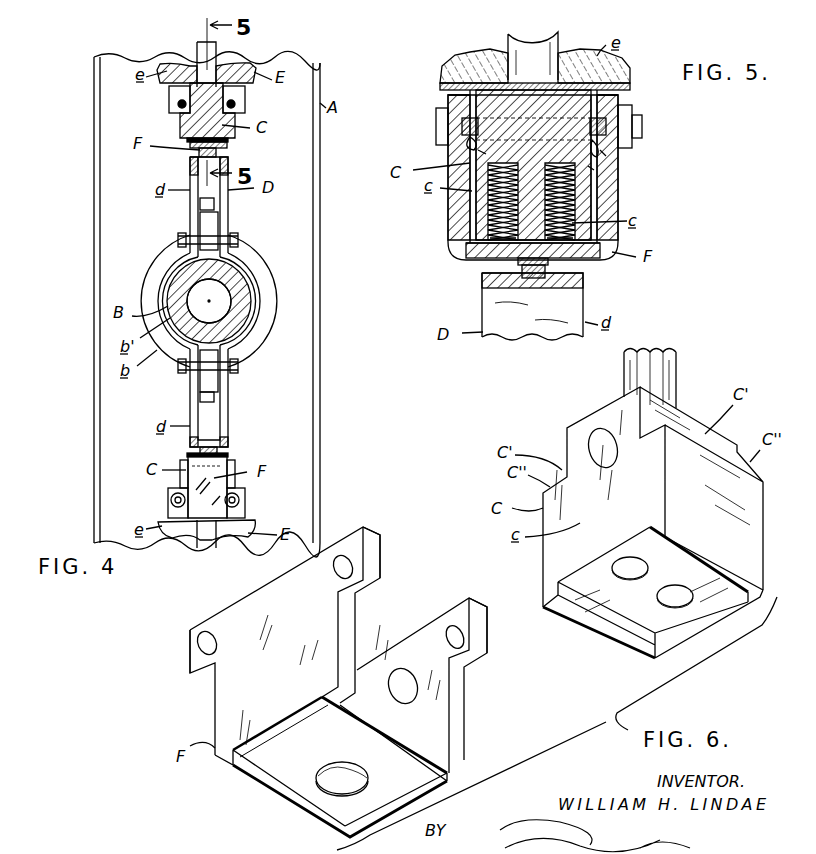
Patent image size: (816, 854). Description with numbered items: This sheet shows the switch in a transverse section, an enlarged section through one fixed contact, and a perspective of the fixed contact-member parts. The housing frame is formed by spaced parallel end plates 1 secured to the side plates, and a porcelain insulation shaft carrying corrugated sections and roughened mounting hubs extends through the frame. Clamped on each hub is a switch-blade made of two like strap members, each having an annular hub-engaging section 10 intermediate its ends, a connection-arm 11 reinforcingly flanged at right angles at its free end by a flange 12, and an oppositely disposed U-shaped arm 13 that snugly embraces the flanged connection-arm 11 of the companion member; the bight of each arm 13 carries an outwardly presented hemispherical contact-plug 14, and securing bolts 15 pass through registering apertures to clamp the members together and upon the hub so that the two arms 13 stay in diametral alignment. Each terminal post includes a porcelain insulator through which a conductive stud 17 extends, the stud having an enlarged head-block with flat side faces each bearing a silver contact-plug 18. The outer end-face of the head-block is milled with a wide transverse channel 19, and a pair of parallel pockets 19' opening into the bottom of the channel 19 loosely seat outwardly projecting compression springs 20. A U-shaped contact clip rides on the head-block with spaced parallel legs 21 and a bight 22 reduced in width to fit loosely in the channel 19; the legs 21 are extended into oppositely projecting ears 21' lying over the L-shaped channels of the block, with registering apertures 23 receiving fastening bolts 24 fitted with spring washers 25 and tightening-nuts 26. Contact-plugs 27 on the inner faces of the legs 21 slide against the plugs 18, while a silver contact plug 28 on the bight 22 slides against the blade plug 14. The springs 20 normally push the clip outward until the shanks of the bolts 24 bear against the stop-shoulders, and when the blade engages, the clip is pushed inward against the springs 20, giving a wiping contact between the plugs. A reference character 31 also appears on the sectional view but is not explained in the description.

In FIG. 4, the end plates 1 is at (304, 152).
In FIG. 4, the hub-engaging section 10 is at (253, 305).
In FIG. 4, the connection-arm 11 is at (220, 220).
In FIG. 4, the flange 12 is at (202, 204).
In FIG. 4, the U-shaped arm 13 is at (190, 170).
In FIG. 4, the contact-plug 14 is at (218, 153).
In FIG. 5, the contact-plug 14 is at (540, 278).
In FIG. 4, the securing bolts 15 is at (239, 240).
In FIG. 4, the stud 17 is at (216, 47).
In FIG. 5, the stud 17 is at (548, 33).
In FIG. 6, the stud 17 is at (676, 372).
In FIG. 5, the contact-plug 18 is at (483, 152).
In FIG. 6, the contact-plug 18 is at (600, 442).
In FIG. 5, the channel 19 is at (509, 262).
In FIG. 6, the channel 19 is at (653, 592).
In FIG. 5, the pockets 19' is at (537, 235).
In FIG. 6, the pockets 19' is at (652, 583).
In FIG. 5, the compression springs 20 is at (500, 203).
In FIG. 4, the legs 21 is at (206, 302).
In FIG. 5, the legs 21 is at (548, 171).
In FIG. 6, the legs 21 is at (338, 650).
In FIG. 6, the ears 21' is at (350, 620).
In FIG. 5, the bight 22 is at (488, 258).
In FIG. 6, the bight 22 is at (310, 798).
In FIG. 6, the apertures 23 is at (343, 562).
In FIG. 4, the fastening bolts 24 is at (178, 104).
In FIG. 5, the fastening bolts 24 is at (440, 126).
In FIG. 5, the spring washers 25 is at (605, 155).
In FIG. 5, the tightening-nuts 26 is at (632, 140).
In FIG. 5, the contact-plugs 27 is at (470, 121).
In FIG. 6, the contact-plugs 27 is at (408, 680).
In FIG. 4, the contact plug 28 is at (200, 150).
In FIG. 5, the contact plug 28 is at (550, 262).
In FIG. 6, the contact plug 28 is at (340, 775).
In FIG. 5, the plate edge 31 is at (623, 94).